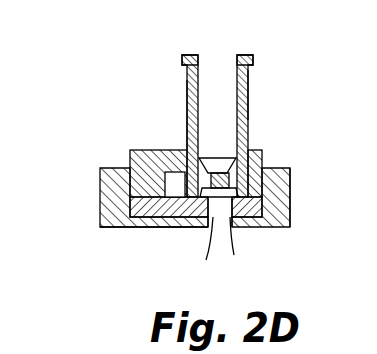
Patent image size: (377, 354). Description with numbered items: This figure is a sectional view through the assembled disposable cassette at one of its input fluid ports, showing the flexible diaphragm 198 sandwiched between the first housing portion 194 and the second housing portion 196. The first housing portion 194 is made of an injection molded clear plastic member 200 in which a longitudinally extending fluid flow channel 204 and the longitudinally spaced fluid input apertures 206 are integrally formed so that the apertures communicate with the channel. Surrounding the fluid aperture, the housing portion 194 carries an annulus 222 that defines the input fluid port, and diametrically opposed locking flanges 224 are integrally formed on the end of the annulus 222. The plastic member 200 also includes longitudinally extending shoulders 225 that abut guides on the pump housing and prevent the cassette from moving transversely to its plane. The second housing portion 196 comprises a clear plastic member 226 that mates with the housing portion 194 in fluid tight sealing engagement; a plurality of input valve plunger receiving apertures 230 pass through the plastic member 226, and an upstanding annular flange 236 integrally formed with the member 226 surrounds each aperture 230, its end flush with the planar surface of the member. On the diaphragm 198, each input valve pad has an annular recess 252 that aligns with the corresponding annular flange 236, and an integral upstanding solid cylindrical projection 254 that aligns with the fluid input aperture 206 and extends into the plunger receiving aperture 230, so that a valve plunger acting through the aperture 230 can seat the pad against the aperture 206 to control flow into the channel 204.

The first housing portion 194 is at (262, 93).
The second housing portion 196 is at (269, 228).
The flexible diaphragm 198 is at (138, 228).
The injection molded clear plastic member 200 is at (250, 80).
The fluid flow channel 204 is at (172, 183).
The fluid input apertures 206 is at (222, 172).
The annulus 222 is at (187, 105).
The locking flanges 224 is at (254, 58).
The longitudinally extending shoulders 225 is at (130, 166).
The clear plastic member 226 is at (122, 234).
The input valve plunger receiving apertures 230 is at (221, 220).
The upstanding annular flange 236 is at (290, 176).
The annular recess 252 is at (206, 238).
The cylindrical projection 254 is at (232, 242).